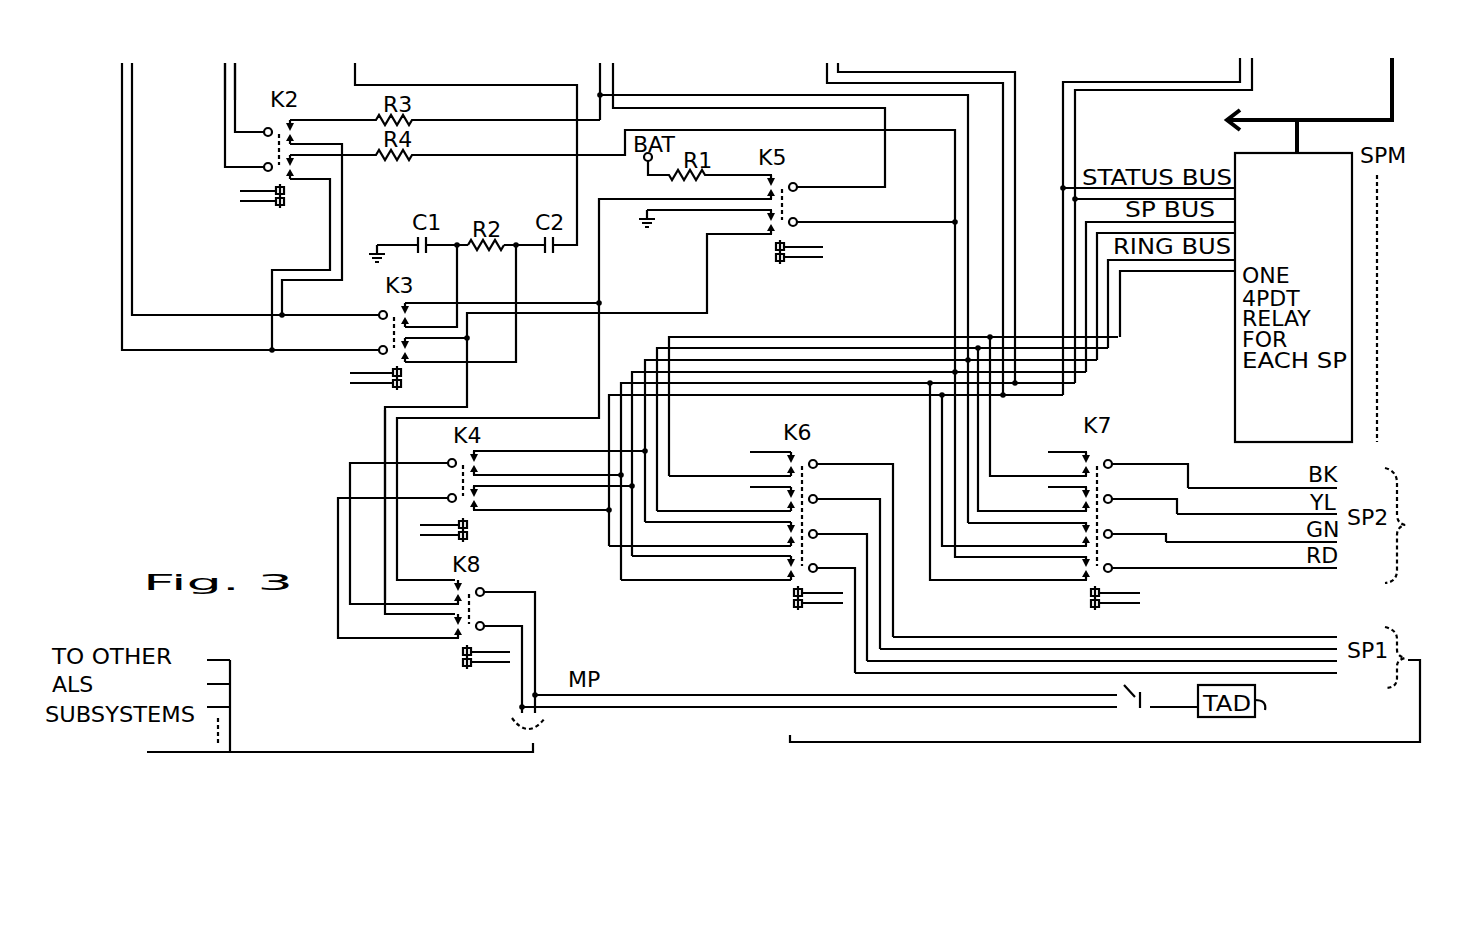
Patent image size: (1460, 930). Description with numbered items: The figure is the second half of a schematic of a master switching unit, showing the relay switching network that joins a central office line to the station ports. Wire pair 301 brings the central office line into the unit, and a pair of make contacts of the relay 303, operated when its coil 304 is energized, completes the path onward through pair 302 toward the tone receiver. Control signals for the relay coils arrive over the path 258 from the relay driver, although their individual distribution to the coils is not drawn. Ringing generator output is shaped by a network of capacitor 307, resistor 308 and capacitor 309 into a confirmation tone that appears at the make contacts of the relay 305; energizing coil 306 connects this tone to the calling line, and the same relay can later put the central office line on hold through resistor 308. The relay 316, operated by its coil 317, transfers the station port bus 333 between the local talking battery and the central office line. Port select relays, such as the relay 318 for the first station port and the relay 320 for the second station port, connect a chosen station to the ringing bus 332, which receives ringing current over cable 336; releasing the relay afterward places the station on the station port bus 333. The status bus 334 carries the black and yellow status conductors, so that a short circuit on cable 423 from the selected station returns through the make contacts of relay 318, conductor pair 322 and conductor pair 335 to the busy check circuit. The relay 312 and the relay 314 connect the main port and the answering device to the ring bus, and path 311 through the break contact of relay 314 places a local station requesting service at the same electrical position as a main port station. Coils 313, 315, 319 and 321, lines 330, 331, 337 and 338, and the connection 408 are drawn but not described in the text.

The path 258 is at (1385, 73).
The wire pair 301 is at (133, 93).
The pair 302 is at (235, 98).
The K2 relay 303 is at (308, 116).
The coil 304 is at (257, 222).
The K3 relay 305 is at (387, 340).
The coil 306 is at (340, 361).
The capacitor 307 is at (427, 205).
The resistor 308 is at (503, 212).
The capacitor 309 is at (544, 212).
The path 311 is at (383, 420).
The K4 relay 312 is at (490, 450).
The relay K4 coil 313 is at (477, 535).
The K1 relay 314 is at (487, 590).
The relay K8 coil 315 is at (452, 650).
The K5 relay 316 is at (812, 188).
The coil 317 is at (837, 258).
The K6 relay 318 is at (832, 463).
The relay K6 coil 319 is at (785, 593).
The K7 relay 320 is at (1118, 463).
The relay K7 coil 321 is at (1083, 593).
The conductor pair 322 is at (668, 443).
The SP1 lines 330 is at (1350, 628).
The SP2 lines 331 is at (1380, 470).
The ringing bus 332 is at (1145, 270).
The SP bus 333 is at (1218, 212).
The status bus 334 is at (1201, 167).
The conductor pair 335 is at (1087, 131).
The cable 336 is at (925, 220).
The connecting line 337 is at (600, 85).
The connecting line 338 is at (622, 85).
The line to other ALS subsystems 408 is at (330, 747).
The cable 423 is at (1333, 745).